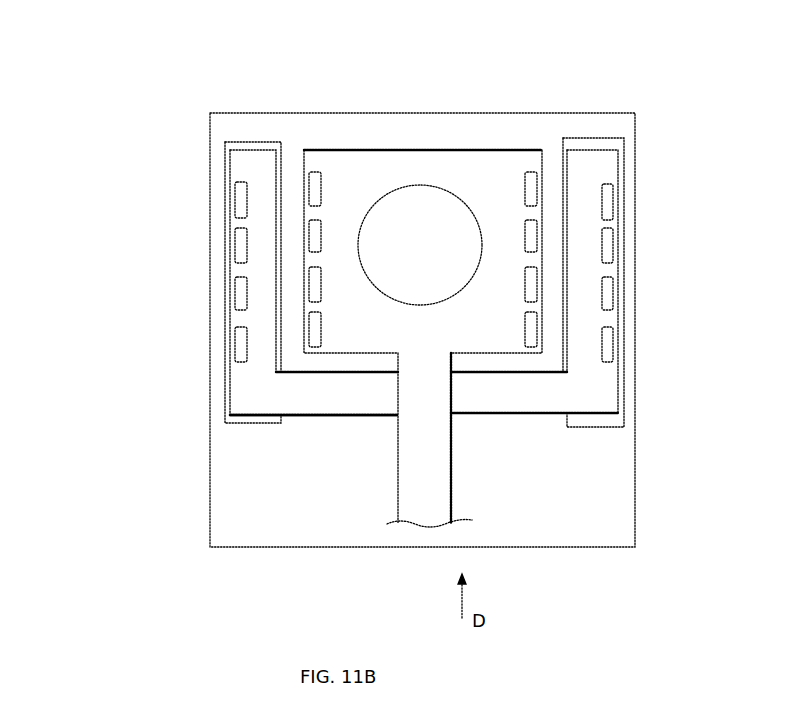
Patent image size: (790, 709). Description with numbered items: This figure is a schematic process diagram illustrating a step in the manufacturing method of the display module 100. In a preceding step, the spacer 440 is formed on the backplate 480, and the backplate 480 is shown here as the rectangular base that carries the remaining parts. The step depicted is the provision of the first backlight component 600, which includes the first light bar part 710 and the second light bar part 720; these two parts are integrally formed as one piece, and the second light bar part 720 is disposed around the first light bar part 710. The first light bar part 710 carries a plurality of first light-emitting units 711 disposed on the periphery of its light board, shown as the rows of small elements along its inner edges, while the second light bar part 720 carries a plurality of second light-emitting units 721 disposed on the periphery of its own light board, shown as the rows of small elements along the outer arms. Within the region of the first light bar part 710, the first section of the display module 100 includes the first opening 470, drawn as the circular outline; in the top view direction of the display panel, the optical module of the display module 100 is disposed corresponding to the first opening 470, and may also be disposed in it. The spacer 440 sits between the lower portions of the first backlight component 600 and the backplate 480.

The display module 100 is at (160, 50).
The backplate 480 is at (209, 120).
The first backlight component 600 is at (376, 305).
The first light bar part 710 is at (407, 164).
The second light bar part 720 is at (258, 174).
The first light-emitting units 711 is at (306, 163).
The second light-emitting units 721 is at (241, 245).
The first opening 470 is at (440, 223).
The spacer 440 is at (265, 418).